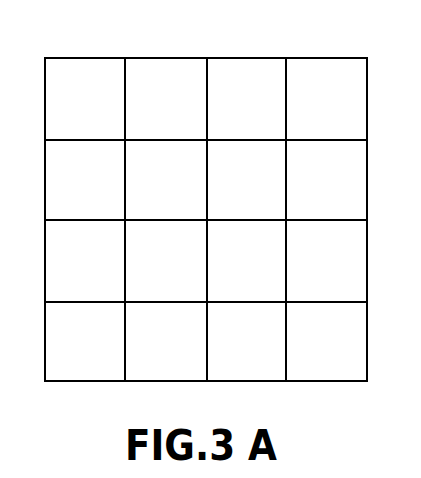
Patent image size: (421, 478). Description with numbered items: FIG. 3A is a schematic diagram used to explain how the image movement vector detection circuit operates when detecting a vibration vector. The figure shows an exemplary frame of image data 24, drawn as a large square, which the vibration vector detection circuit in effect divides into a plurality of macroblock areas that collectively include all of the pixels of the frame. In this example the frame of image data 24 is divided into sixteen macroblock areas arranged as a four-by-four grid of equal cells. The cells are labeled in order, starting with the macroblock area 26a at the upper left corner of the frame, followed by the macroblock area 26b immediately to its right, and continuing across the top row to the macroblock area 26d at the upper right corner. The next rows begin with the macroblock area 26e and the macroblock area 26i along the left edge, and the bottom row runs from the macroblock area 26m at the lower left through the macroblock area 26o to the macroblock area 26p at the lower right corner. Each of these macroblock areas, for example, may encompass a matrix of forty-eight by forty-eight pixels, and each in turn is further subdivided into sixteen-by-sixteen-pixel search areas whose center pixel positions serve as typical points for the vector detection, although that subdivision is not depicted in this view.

The frame of image data 24 is at (368, 40).
The macroblock area 26a is at (107, 114).
The macroblock area 26b is at (188, 111).
The macroblock area 26d is at (348, 110).
The macroblock area 26e is at (106, 193).
The macroblock area 26i is at (105, 277).
The macroblock area 26m is at (118, 358).
The macroblock area 26o is at (272, 355).
The macroblock area 26p is at (355, 358).